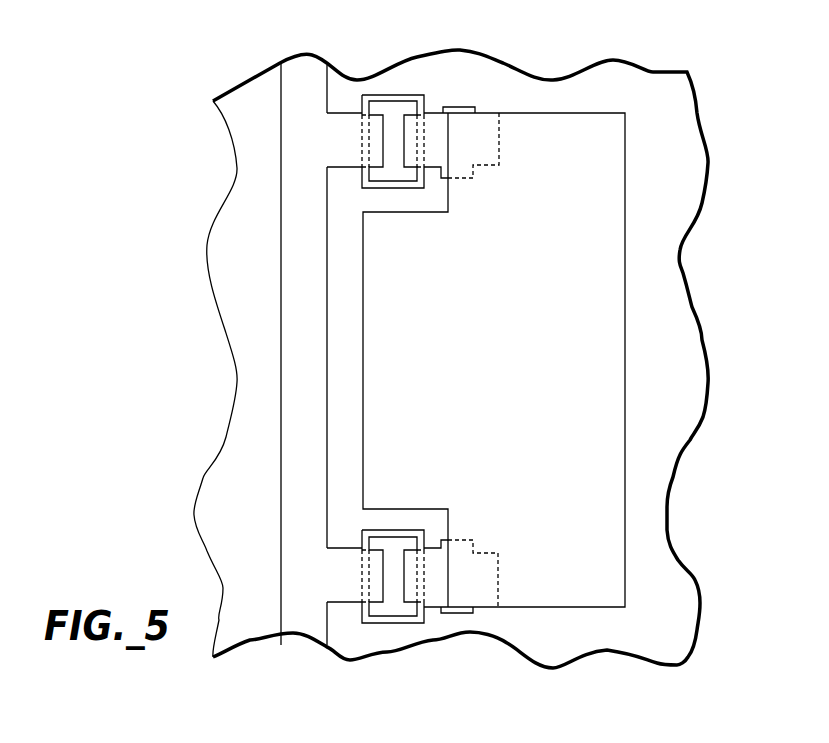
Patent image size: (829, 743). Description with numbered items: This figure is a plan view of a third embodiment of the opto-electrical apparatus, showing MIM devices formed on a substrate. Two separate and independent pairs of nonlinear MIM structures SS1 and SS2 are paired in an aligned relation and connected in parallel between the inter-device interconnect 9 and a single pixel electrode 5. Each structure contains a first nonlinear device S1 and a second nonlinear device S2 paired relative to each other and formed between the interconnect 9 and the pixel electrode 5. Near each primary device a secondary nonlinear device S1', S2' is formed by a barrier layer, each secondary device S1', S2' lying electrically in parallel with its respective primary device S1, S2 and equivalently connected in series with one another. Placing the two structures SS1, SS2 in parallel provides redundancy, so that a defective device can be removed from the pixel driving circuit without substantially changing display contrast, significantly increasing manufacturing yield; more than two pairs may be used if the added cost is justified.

The pixel electrode 5 is at (605, 355).
The inter-device interconnect 9 is at (301, 373).
The first nonlinear device S1 is at (287, 363).
The second nonlinear device S2 is at (467, 370).
The secondary nonlinear device S1' is at (386, 358).
The secondary nonlinear device S2' is at (426, 358).
The nonlinear MIM structure SS1 is at (393, 95).
The nonlinear MIM structure SS2 is at (384, 624).